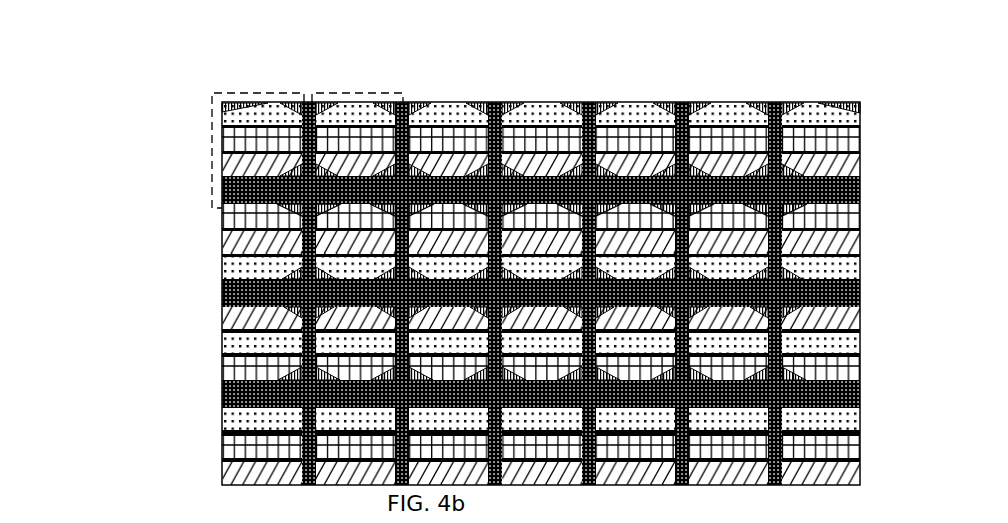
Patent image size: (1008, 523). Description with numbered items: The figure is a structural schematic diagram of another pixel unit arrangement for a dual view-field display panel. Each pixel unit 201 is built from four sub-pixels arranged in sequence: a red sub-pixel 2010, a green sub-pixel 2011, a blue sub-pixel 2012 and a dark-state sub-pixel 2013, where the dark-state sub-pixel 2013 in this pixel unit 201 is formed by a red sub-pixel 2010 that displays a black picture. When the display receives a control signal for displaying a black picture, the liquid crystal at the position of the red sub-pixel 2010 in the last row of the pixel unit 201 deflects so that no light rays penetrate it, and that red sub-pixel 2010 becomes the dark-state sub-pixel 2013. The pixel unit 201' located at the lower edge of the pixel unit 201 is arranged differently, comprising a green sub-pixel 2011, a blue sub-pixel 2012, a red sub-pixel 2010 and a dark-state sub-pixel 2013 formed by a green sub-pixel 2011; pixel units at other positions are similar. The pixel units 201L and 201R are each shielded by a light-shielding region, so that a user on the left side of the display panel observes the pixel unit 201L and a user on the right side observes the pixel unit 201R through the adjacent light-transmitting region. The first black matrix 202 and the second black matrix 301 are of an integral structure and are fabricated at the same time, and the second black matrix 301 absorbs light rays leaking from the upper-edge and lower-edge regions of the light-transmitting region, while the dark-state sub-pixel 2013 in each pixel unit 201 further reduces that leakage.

The pixel unit 201 is at (446, 151).
The pixel unit 201' is at (446, 250).
The pixel unit 201L is at (283, 96).
The pixel unit 201R is at (344, 97).
The red sub-pixel 2010 is at (262, 115).
The green sub-pixel 2011 is at (262, 142).
The blue sub-pixel 2012 is at (258, 168).
The dark-state sub-pixel 2013 is at (240, 195).
The first black matrix 202 is at (493, 102).
The second black matrix 301 is at (414, 102).